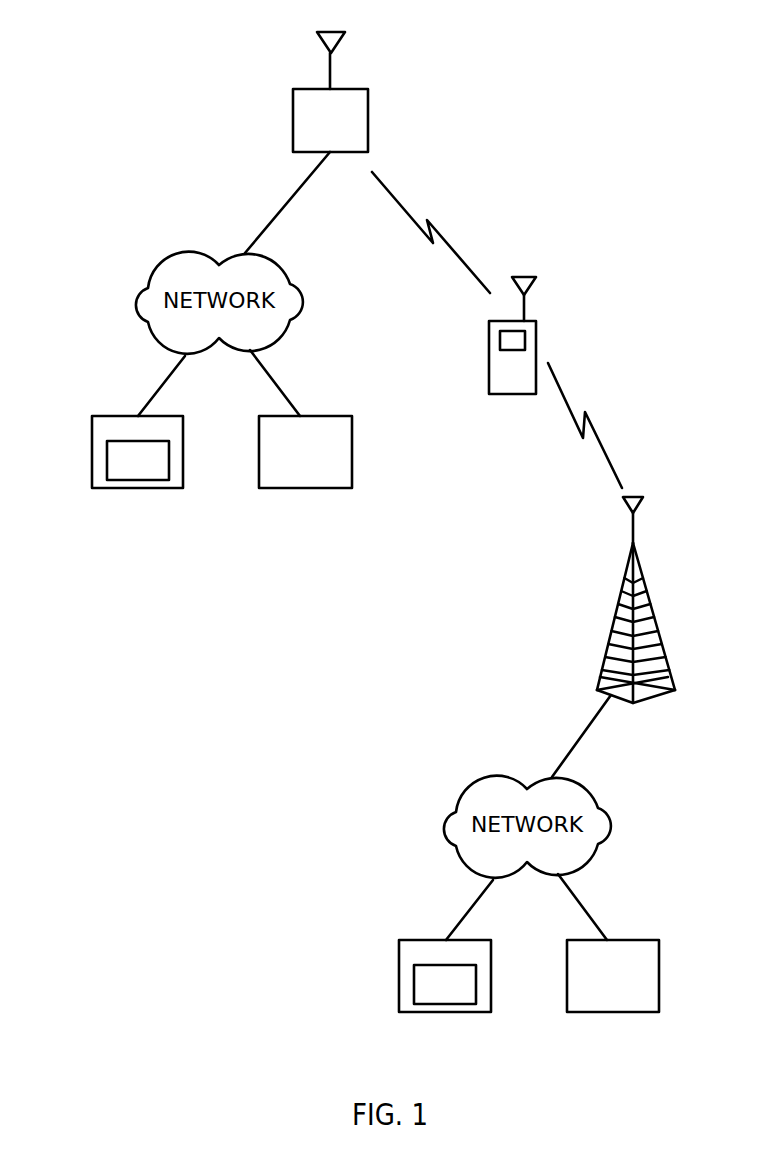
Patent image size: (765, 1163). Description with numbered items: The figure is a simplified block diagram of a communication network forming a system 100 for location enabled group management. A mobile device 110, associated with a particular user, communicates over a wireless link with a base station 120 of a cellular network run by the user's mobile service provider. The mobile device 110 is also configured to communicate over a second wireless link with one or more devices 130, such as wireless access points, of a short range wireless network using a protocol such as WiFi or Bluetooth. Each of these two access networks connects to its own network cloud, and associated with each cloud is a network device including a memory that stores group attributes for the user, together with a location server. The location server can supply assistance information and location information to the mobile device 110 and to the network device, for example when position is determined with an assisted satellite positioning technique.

The system 100 is at (633, 65).
The mobile device 110 is at (545, 330).
The base station 120 is at (640, 560).
The device 130 is at (350, 89).